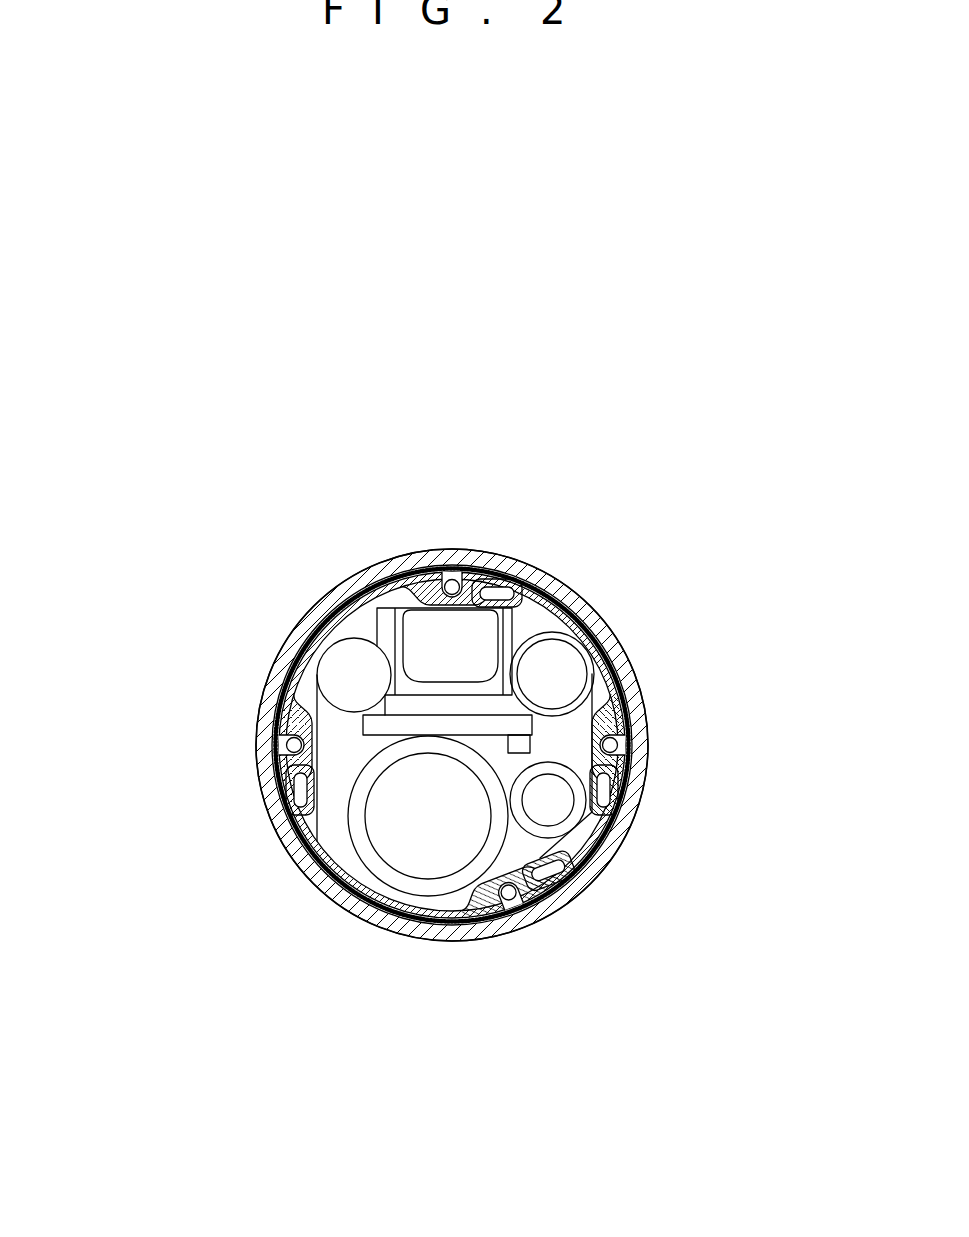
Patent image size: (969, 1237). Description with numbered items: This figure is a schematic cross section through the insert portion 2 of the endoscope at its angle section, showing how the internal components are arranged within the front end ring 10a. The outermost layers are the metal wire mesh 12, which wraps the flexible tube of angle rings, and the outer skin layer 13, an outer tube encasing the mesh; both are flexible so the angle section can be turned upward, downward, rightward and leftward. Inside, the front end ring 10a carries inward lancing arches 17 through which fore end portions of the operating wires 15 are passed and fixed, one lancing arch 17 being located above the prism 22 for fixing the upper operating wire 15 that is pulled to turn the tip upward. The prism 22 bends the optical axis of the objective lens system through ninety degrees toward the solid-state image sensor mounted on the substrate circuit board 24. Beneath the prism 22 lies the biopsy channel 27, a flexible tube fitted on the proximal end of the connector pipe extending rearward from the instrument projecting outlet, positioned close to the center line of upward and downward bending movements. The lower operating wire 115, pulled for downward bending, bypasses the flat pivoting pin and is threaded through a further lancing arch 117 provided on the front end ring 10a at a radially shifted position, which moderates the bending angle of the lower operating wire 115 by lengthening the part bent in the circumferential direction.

The insert portion 2 is at (498, 518).
The front end ring 10a is at (337, 900).
The metal wire mesh 12 is at (458, 927).
The outer skin layer 13 is at (292, 853).
The operating wire 15 is at (451, 578).
The lancing arch 17 is at (492, 724).
The prism 22 is at (433, 643).
The substrate circuit board 24 is at (603, 627).
The biopsy channel 27 is at (397, 880).
The lower operating wire 115 is at (510, 898).
The lancing arch 117 is at (580, 873).